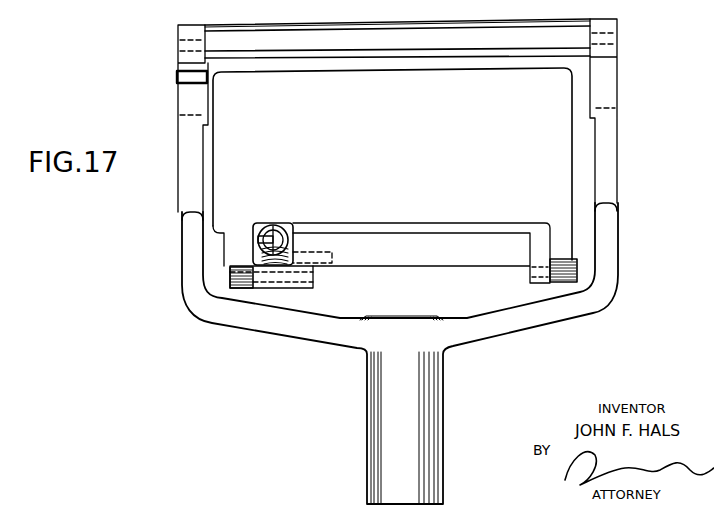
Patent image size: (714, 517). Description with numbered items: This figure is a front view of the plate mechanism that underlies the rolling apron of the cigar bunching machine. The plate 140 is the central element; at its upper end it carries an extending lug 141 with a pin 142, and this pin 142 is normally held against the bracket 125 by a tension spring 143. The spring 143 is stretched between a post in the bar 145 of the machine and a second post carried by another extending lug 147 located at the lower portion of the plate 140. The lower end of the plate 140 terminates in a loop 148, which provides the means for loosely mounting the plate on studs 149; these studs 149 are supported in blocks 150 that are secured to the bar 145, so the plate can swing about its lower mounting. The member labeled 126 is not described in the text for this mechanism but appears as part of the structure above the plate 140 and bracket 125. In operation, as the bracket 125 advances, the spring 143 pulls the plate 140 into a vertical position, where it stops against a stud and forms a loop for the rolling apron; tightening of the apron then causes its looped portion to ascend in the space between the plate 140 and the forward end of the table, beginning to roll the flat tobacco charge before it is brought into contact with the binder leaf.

The bracket 125 is at (187, 238).
The top rail 126 is at (405, 26).
The plate 140 is at (573, 143).
The extending lug 141 is at (207, 100).
The pin 142 is at (177, 76).
The tension spring 143 is at (278, 238).
The bar 145 is at (423, 256).
The extending lug 147 is at (268, 228).
The loop 148 is at (237, 288).
The studs 149 is at (229, 280).
The blocks 150 is at (280, 284).